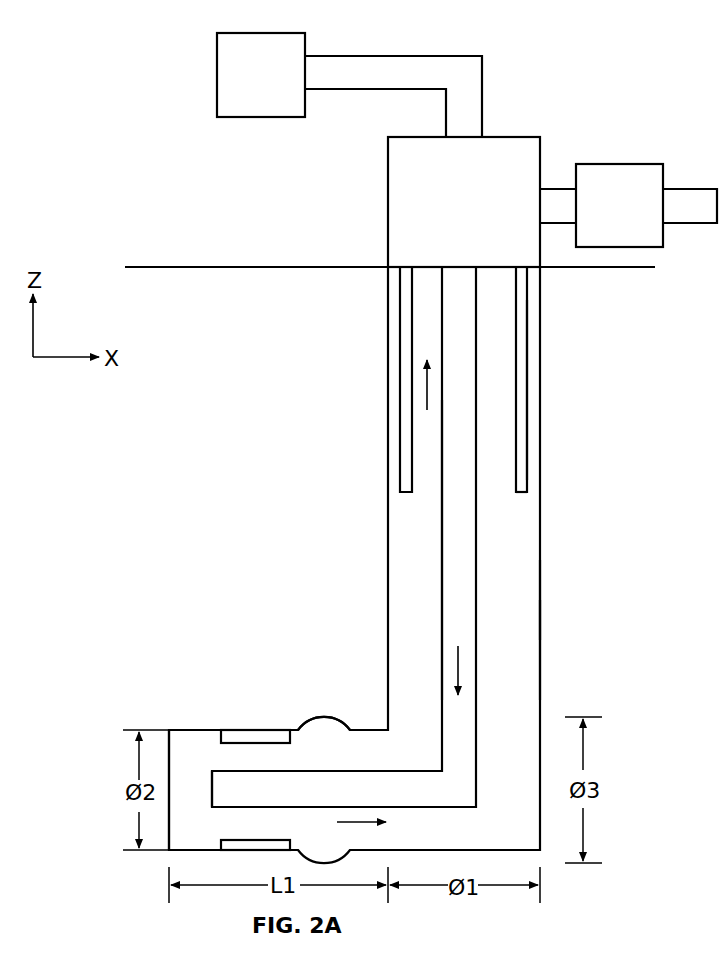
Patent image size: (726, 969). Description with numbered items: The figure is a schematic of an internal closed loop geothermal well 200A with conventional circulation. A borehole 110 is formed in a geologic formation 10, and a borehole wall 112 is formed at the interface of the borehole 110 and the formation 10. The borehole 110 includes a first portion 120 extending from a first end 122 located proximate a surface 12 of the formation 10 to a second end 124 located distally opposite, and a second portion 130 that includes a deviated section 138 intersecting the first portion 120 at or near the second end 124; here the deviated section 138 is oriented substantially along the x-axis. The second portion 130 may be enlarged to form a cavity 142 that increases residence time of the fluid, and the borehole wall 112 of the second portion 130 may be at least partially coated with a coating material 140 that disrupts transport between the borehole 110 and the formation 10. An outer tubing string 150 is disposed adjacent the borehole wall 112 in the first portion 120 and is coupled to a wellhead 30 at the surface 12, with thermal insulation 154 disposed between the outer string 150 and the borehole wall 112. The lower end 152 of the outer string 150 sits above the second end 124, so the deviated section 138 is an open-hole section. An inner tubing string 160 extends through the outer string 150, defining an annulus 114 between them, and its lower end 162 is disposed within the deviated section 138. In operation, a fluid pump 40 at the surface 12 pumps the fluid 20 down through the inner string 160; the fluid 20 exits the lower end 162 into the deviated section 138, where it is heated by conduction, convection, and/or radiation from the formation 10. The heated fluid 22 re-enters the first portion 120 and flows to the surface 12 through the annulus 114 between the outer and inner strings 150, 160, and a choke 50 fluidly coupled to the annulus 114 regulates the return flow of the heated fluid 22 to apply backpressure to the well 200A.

The internal closed loop geothermal well 200A is at (126, 137).
The fluid pump 40 is at (276, 87).
The wellhead 30 is at (478, 218).
The choke 50 is at (634, 219).
The surface 12 is at (200, 266).
The geologic formation 10 is at (232, 463).
The borehole 110 is at (562, 675).
The borehole wall 112 is at (542, 652).
The annulus 114 is at (536, 615).
The second end 124 is at (458, 848).
The second portion 130 is at (204, 825).
The deviated section 138 is at (362, 765).
The cavity 142 is at (323, 715).
The coating material 140 is at (255, 734).
The inner tubing string 160 is at (452, 460).
The first portion 120 is at (420, 565).
The lower end 162 is at (210, 792).
The first end 122 is at (458, 266).
The outer tubing string 150 is at (523, 448).
The thermal insulation 154 is at (535, 388).
The lower end 152 is at (522, 493).
The heated fluid 22 is at (425, 392).
The fluid 20 is at (462, 672).